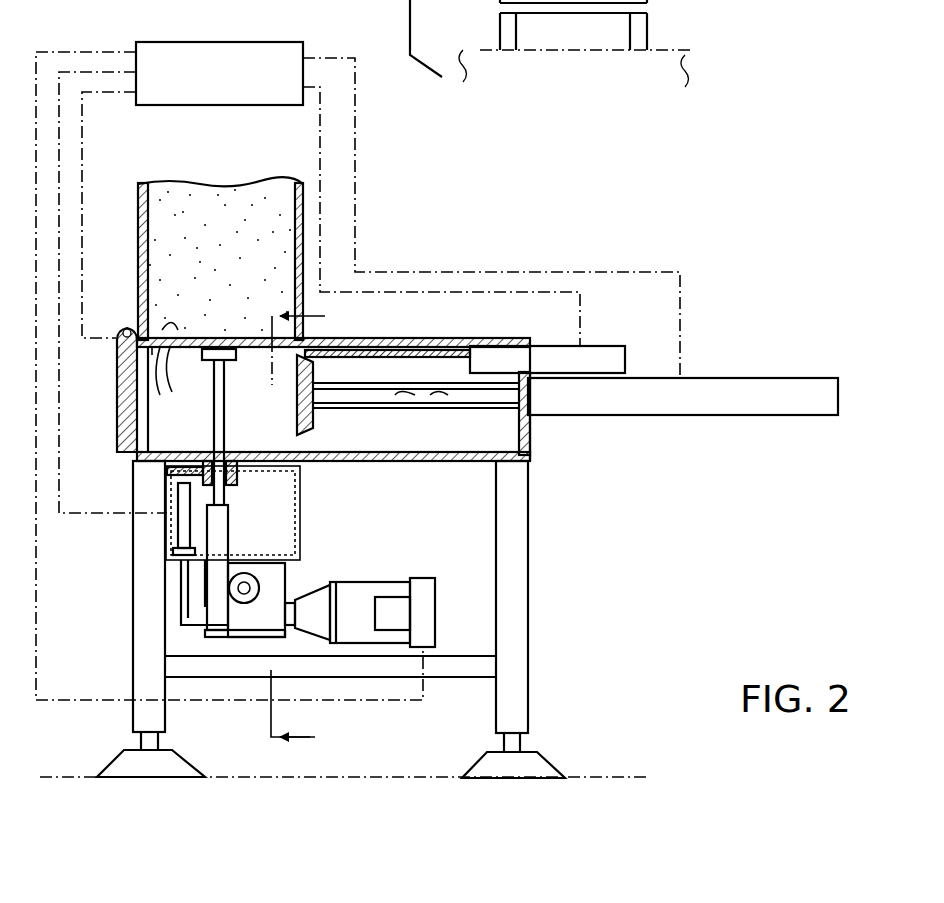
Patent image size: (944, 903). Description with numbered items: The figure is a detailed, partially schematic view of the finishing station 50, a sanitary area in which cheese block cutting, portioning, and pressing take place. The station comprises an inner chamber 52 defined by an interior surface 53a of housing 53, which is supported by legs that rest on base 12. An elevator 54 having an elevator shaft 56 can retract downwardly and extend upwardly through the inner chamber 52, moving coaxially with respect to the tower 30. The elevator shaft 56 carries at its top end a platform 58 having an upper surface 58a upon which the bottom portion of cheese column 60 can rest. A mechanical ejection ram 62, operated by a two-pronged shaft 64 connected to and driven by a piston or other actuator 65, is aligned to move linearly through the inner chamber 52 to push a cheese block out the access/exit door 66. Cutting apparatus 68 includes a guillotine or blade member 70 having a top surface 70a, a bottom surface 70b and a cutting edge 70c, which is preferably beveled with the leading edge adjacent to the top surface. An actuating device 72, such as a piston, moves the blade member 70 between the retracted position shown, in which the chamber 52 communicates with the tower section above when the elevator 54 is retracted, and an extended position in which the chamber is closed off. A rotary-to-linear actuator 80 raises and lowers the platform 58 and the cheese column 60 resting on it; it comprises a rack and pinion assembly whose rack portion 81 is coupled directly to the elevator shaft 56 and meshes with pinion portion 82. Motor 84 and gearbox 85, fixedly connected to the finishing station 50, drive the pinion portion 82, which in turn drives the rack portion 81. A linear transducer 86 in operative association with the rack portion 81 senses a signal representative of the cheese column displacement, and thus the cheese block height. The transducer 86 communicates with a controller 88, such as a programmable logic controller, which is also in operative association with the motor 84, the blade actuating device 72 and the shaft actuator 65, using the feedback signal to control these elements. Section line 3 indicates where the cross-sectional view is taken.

The section line 3— 3 is at (296, 531).
The base 12 is at (680, 56).
The tower 30 is at (138, 230).
The finishing station 50 is at (630, 548).
The inner chamber 52 is at (192, 445).
The housing 53 is at (472, 338).
The interior surface 53a is at (455, 348).
The elevator 54 is at (248, 528).
The elevator shaft 56 is at (226, 406).
The platform 58 is at (170, 372).
The upper surface 58a is at (167, 385).
The cheese column 60 is at (218, 183).
The mechanical ejection ram 62 is at (313, 428).
The two-pronged shaft 64 is at (440, 398).
The actuator 65 is at (648, 416).
The access/exit door 66 is at (125, 400).
The cutting apparatus 68 is at (392, 398).
The blade member 70 is at (388, 370).
The top surface 70a is at (414, 348).
The bottom surface 70b is at (330, 362).
The cutting edge 70c is at (318, 340).
The actuating device 72 is at (596, 350).
The rotary-to-linear actuator 80 is at (235, 612).
The rack portion 81 is at (230, 512).
The pinion portion 82 is at (252, 588).
The motor 84 is at (360, 578).
The gearbox 85 is at (340, 590).
The linear transducer 86 is at (185, 532).
The controller 88 is at (224, 42).